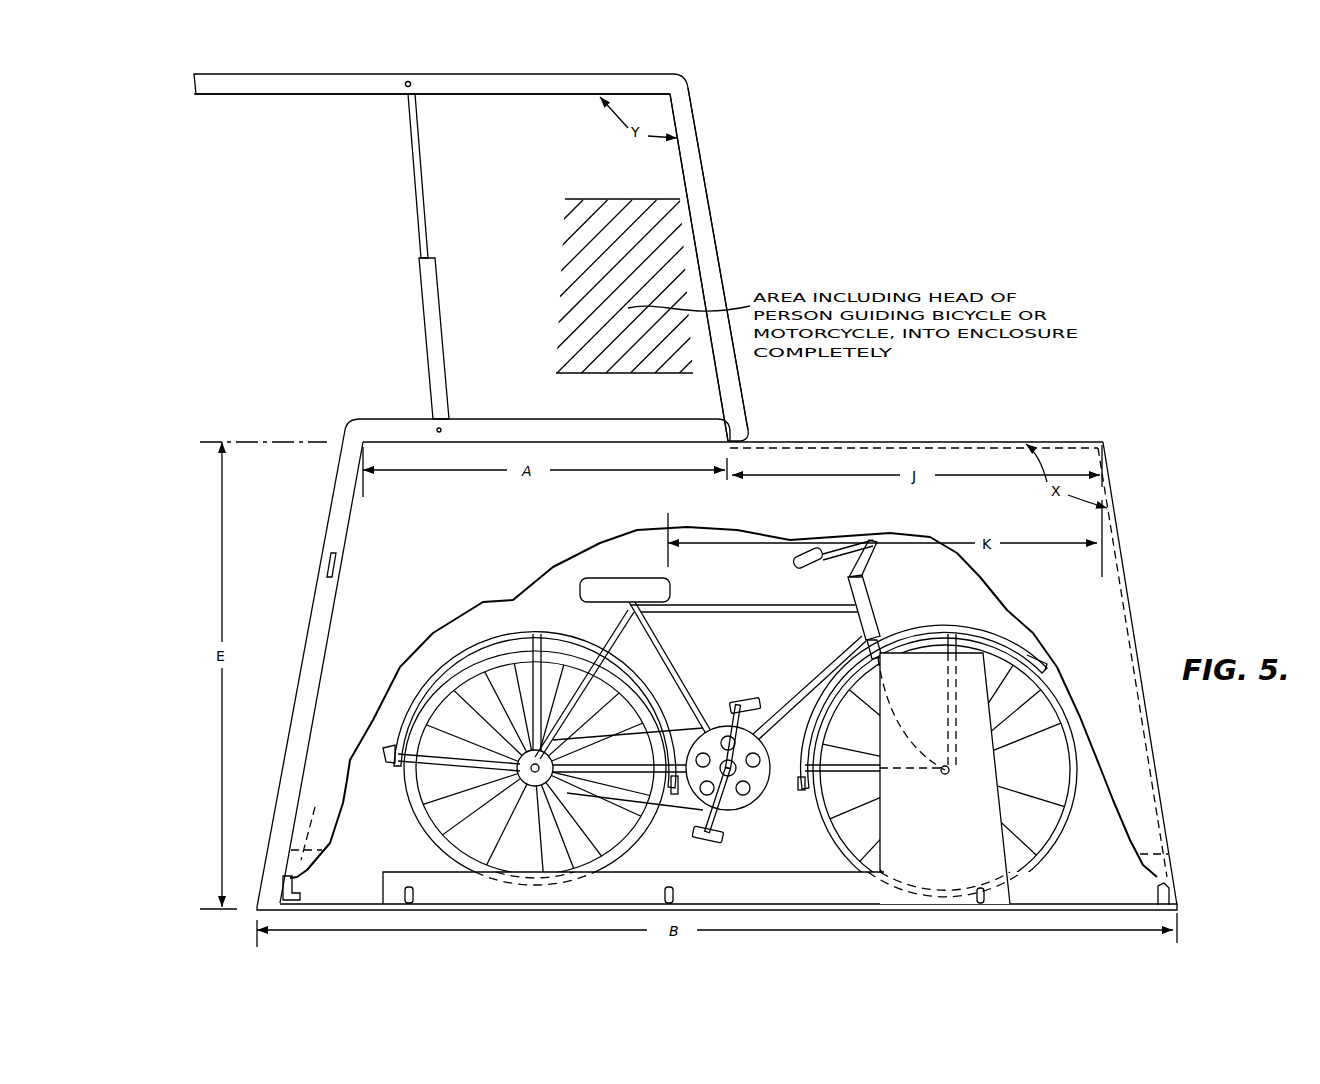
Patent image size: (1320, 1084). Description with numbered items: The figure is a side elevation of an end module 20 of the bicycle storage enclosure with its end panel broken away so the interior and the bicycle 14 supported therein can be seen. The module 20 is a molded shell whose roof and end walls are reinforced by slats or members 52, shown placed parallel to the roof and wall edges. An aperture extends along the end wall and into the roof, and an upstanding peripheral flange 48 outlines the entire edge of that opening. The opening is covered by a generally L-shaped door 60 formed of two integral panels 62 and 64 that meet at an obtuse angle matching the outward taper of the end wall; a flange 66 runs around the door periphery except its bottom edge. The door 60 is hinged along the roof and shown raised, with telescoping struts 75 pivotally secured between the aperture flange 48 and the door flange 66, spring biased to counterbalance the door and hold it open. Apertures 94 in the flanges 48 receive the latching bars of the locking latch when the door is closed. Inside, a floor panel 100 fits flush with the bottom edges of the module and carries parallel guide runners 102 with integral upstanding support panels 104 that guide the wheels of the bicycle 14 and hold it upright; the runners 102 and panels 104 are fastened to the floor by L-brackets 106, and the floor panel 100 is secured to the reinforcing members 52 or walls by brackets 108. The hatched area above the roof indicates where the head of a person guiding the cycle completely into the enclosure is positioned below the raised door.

The bicycle 14 is at (723, 715).
The right-hand end module 20 is at (1056, 440).
The upstanding peripheral flange 48 is at (532, 428).
The reinforcing slats or members 52 is at (898, 443).
The L-shaped door closure 60 is at (484, 244).
The door panel 62 is at (371, 73).
The door panel 64 is at (719, 258).
The door flange 66 is at (425, 252).
The telescoping struts 75 is at (422, 308).
The apertures in flanges 94 is at (325, 567).
The floor panel 100 is at (900, 913).
The guide runners 102 is at (797, 855).
The upstanding support panels 104 is at (948, 822).
The L-brackets 106 is at (410, 886).
The brackets 108 is at (298, 893).